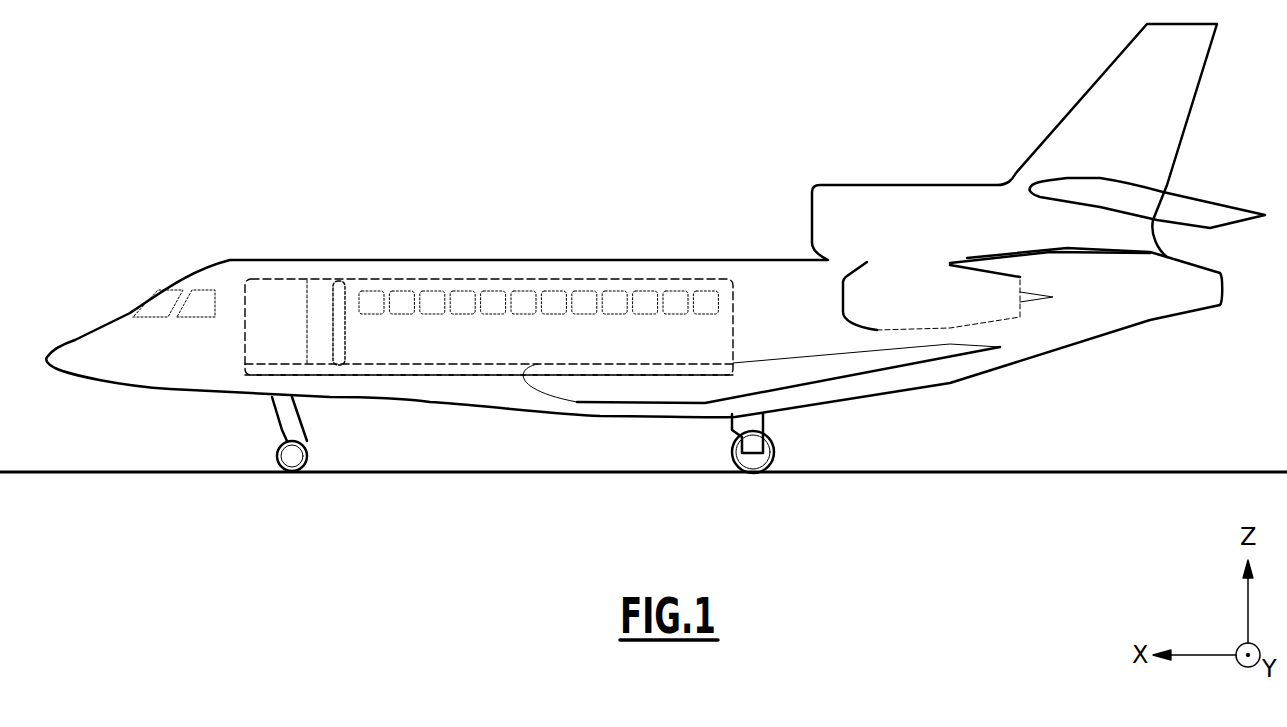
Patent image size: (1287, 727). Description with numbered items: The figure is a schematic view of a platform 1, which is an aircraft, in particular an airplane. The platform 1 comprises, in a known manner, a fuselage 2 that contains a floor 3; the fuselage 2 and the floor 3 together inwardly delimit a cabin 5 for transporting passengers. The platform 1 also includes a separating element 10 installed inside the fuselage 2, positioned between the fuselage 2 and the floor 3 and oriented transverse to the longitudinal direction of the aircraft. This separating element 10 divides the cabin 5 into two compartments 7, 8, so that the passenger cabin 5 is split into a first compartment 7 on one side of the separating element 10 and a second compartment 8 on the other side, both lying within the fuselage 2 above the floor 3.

The platform 1 is at (165, 107).
The fuselage 2 is at (770, 273).
The floor 3 is at (428, 367).
The cabin 5 is at (462, 285).
The compartment 7 is at (320, 313).
The compartment 8 is at (535, 285).
The separating element 10 is at (340, 295).